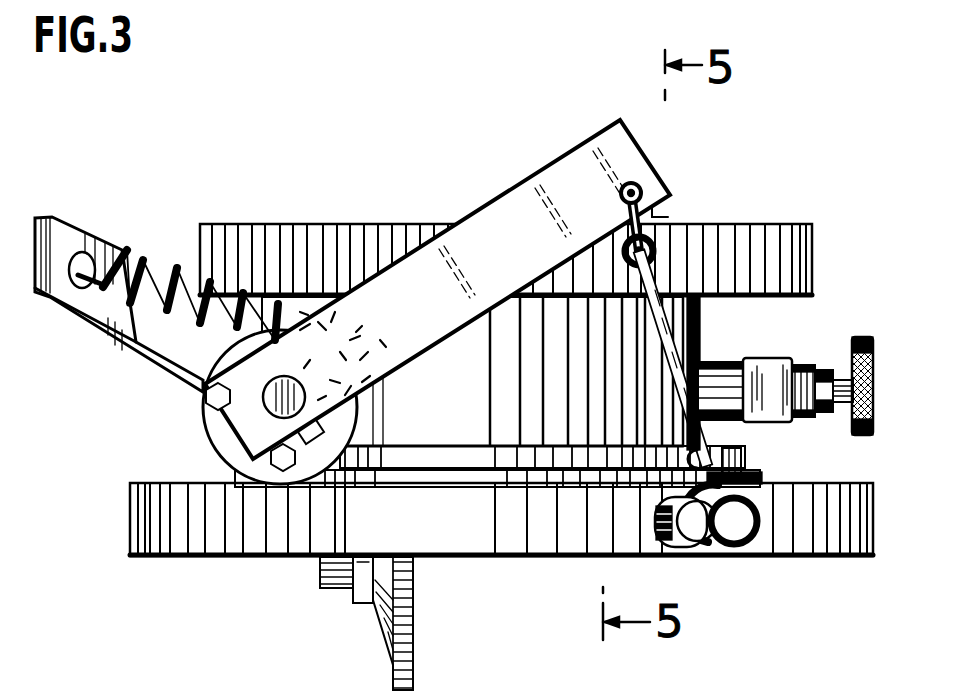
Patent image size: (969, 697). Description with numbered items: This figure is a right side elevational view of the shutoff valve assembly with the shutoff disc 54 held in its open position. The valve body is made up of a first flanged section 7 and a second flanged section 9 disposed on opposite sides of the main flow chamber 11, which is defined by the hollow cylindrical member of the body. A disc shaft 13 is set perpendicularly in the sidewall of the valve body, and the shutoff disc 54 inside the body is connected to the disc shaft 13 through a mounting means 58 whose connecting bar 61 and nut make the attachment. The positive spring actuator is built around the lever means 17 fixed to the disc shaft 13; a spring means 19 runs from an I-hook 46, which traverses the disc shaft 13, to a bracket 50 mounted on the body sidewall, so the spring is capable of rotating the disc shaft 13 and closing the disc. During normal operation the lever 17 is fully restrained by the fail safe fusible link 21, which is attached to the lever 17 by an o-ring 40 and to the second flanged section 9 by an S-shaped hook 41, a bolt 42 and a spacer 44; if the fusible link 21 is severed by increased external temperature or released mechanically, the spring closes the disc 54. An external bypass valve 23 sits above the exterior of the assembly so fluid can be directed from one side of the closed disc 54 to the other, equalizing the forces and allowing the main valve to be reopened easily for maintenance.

The first flanged section 7 is at (336, 224).
The second flanged section 9 is at (836, 487).
The main flow chamber 11 is at (441, 403).
The disc shaft 13 is at (205, 424).
The lever means 17 is at (491, 204).
The spring means 19 is at (141, 257).
The fail safe fusible link 21 is at (702, 326).
The external bypass valve 23 is at (765, 360).
The o-ring 40 is at (647, 195).
The S-shaped hook 41 is at (741, 462).
The bolt 42 is at (735, 547).
The spacer 44 is at (676, 555).
The I-hook 46 is at (358, 330).
The bracket 50 is at (128, 333).
The shutoff disc 54 is at (417, 652).
The mounting means 58 is at (320, 577).
The connecting bar 61 is at (353, 600).